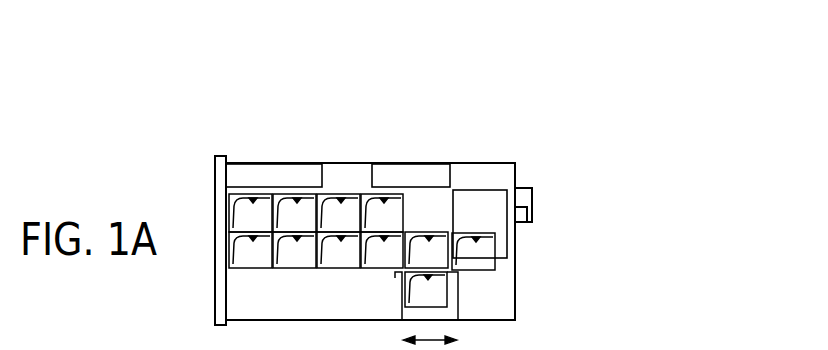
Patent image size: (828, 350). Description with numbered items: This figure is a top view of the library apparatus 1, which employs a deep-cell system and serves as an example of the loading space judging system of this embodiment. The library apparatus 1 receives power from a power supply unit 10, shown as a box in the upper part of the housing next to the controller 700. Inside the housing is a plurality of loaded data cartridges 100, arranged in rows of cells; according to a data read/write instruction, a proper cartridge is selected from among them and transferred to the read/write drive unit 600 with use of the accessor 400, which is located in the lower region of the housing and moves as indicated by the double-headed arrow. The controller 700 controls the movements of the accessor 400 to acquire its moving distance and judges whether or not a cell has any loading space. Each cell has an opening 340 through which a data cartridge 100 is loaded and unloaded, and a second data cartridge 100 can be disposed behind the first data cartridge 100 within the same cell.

The library apparatus 1 is at (412, 41).
The controller 700 is at (260, 163).
The power supply unit 10 is at (417, 163).
The read/write drive unit 600 is at (487, 195).
The opening 340 is at (435, 270).
The data cartridge 100 is at (433, 285).
The accessor 400 is at (452, 300).